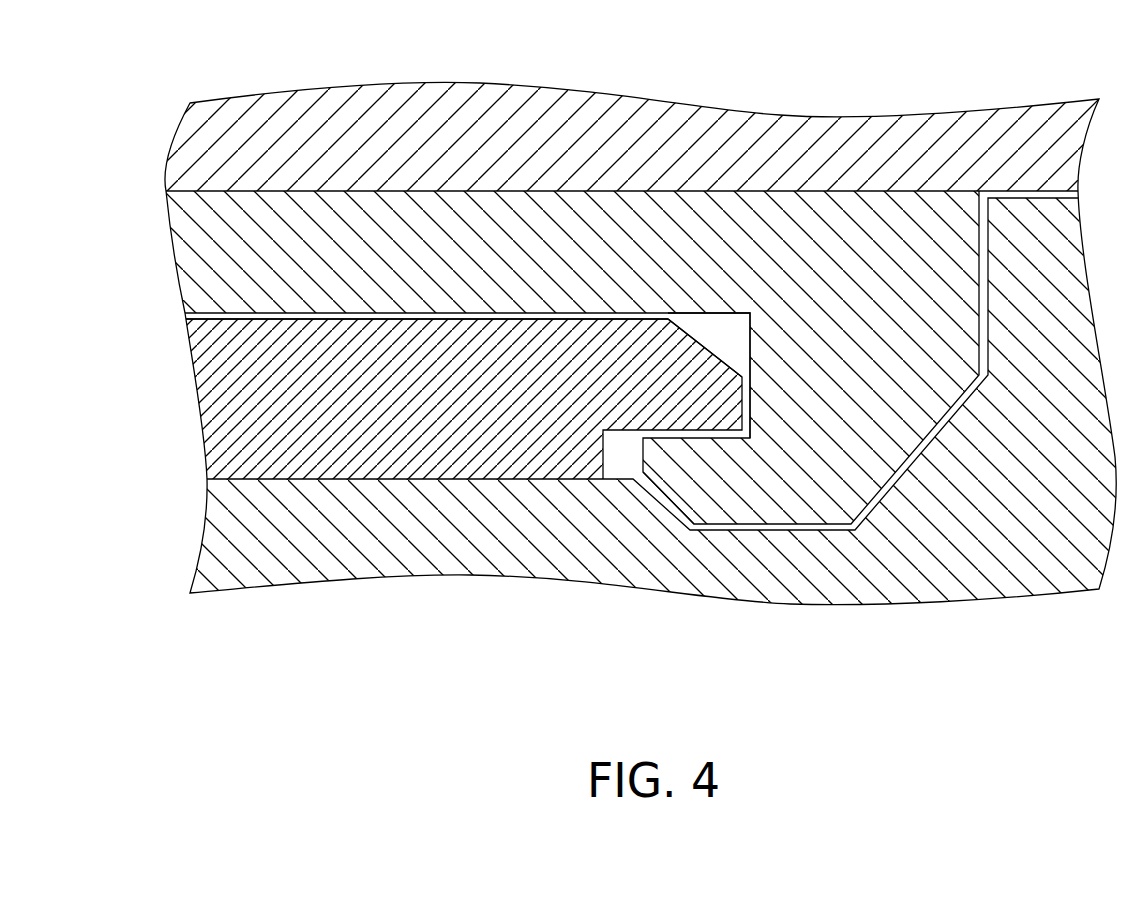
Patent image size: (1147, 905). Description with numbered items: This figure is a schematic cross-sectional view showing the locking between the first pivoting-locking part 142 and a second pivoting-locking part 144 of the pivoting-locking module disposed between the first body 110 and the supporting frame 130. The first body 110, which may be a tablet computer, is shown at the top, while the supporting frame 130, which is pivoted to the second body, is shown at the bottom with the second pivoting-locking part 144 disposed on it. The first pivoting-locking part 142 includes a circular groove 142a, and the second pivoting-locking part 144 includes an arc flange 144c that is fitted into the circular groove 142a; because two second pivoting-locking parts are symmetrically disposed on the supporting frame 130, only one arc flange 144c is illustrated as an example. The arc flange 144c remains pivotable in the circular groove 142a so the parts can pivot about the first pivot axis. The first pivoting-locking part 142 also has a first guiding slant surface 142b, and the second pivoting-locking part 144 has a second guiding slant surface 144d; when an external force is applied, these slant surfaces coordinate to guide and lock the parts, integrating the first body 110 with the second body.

The first body 110 is at (957, 157).
The supporting frame 130 is at (465, 530).
The first pivoting-locking part 142 is at (557, 248).
The circular groove 142a is at (718, 337).
The first guiding slant surface 142b is at (674, 503).
The second pivoting-locking part 144 is at (240, 438).
The arc flange 144c is at (637, 372).
The second guiding slant surface 144d is at (723, 358).